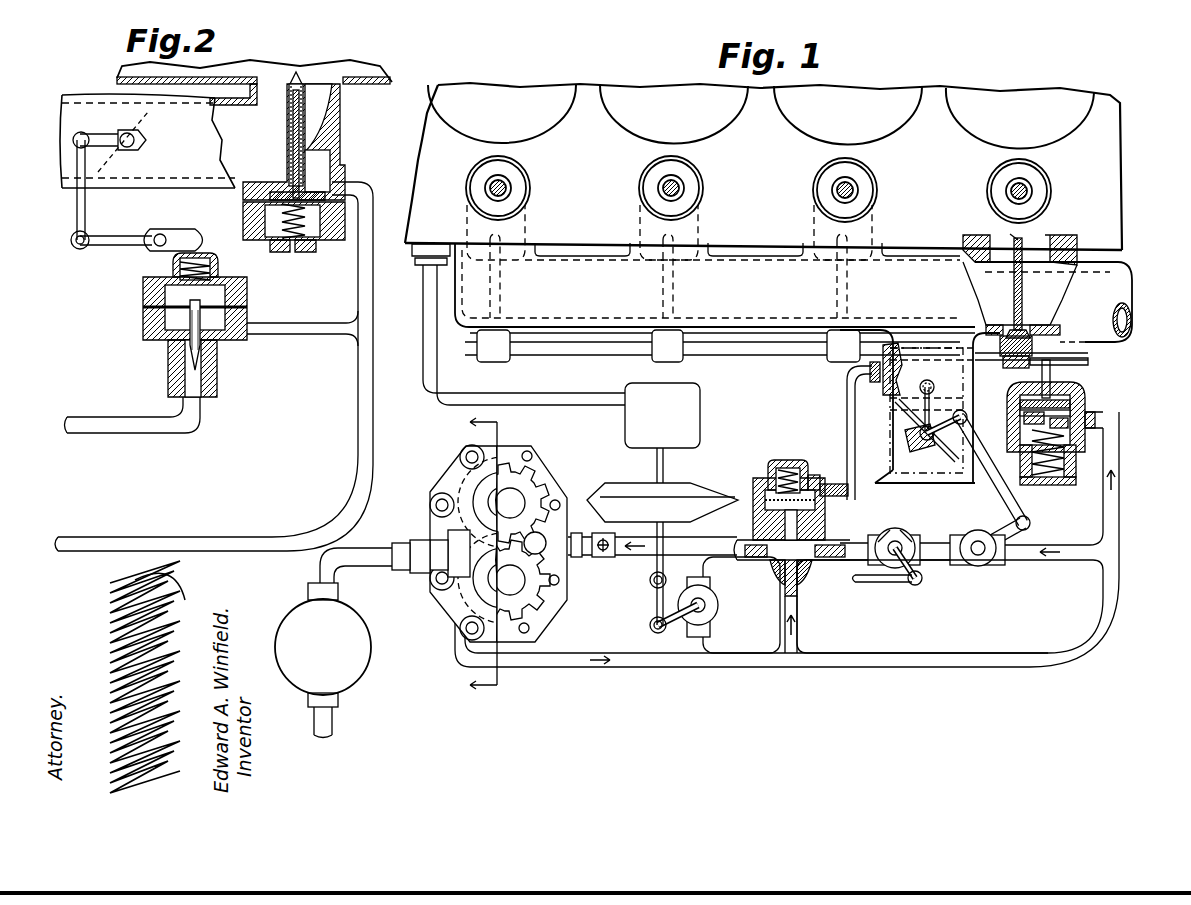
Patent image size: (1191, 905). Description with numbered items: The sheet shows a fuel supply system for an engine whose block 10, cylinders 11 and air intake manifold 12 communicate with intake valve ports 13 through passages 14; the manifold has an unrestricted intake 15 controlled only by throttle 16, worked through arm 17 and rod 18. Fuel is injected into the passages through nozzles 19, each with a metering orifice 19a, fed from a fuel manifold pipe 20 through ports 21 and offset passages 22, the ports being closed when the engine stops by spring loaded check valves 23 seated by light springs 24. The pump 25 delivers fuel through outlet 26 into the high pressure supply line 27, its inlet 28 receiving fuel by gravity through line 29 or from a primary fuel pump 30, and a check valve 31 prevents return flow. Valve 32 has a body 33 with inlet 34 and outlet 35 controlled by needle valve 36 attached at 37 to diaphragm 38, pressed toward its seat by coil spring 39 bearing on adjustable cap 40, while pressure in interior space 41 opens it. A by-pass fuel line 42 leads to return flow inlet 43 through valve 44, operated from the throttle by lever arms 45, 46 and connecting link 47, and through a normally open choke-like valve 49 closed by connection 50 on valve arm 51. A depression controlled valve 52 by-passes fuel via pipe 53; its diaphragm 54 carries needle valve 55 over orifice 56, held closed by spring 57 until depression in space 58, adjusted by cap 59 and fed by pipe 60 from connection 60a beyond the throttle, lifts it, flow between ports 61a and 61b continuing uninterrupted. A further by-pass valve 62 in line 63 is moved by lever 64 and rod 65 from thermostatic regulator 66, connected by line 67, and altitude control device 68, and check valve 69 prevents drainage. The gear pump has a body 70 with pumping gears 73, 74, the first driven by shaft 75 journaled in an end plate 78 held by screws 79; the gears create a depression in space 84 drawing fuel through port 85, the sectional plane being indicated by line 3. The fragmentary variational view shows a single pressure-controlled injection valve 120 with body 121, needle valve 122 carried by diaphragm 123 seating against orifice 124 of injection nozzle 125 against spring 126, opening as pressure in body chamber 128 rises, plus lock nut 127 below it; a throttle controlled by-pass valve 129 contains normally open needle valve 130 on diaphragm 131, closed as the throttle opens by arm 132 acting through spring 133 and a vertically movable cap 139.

In FIG. 1, the engine block 10 is at (1100, 192).
In FIG. 1, the cylinders 11 is at (653, 103).
In FIG. 1, the air intake manifold 12 is at (800, 312).
In FIG. 1, the intake valve ports 13 is at (515, 186).
In FIG. 1, the passages 14 is at (512, 230).
In FIG. 1, the intake 15 is at (893, 462).
In FIG. 1, the throttle 16 is at (905, 432).
In FIG. 1, the arm 17 is at (905, 397).
In FIG. 1, the rod 18 is at (978, 392).
In FIG. 1, the nozzles 19 is at (500, 275).
In FIG. 1, the nozzle orifice 19a is at (1022, 245).
In FIG. 1, the fuel manifold pipe 20 is at (712, 358).
In FIG. 1, the ports 21 is at (1030, 345).
In FIG. 1, the offset passages 22 is at (1026, 332).
In FIG. 1, the spring loaded check valves 23 is at (1003, 346).
In FIG. 1, the springs 24 is at (1014, 322).
In FIG. 1, the pump 25 is at (559, 466).
In FIG. 1, the outlet 26 is at (448, 540).
In FIG. 1, the high pressure supply line 27 is at (866, 667).
In FIG. 2, the high pressure supply line 27 is at (358, 300).
In FIG. 1, the pump inlet 28 is at (420, 574).
In FIG. 1, the line 29 is at (372, 560).
In FIG. 1, the primary fuel pump 30 is at (323, 645).
In FIG. 1, the check valve 31 is at (415, 540).
In FIG. 1, the valve 32 is at (1082, 392).
In FIG. 1, the body 33 is at (1088, 402).
In FIG. 1, the inlet 34 is at (1090, 418).
In FIG. 1, the outlet 35 is at (1052, 382).
In FIG. 1, the needle valve 36 is at (1024, 418).
In FIG. 1, the attachment 37 is at (1030, 435).
In FIG. 1, the diaphragm 38 is at (1098, 428).
In FIG. 1, the coil spring 39 is at (1090, 476).
In FIG. 1, the cap 40 is at (1052, 486).
In FIG. 1, the interior space 41 is at (1090, 385).
In FIG. 1, the by-pass fuel line 42 is at (1035, 545).
In FIG. 2, the by-pass fuel line 42 is at (287, 336).
In FIG. 1, the return flow inlet 43 is at (578, 532).
In FIG. 1, the valve 44 is at (966, 540).
In FIG. 1, the lever arm 45 is at (940, 446).
In FIG. 1, the lever arm 46 is at (1006, 521).
In FIG. 1, the connecting link 47 is at (1003, 494).
In FIG. 1, the normally open valve 49 is at (888, 532).
In FIG. 1, the connection 50 is at (878, 587).
In FIG. 1, the valve arm 51 is at (922, 577).
In FIG. 1, the vacuum controlled valve 52 is at (752, 472).
In FIG. 1, the pipe 53 is at (830, 535).
In FIG. 1, the diaphragm 54 is at (753, 490).
In FIG. 1, the needle valve 55 is at (825, 518).
In FIG. 1, the orifice 56 is at (785, 588).
In FIG. 1, the spring 57 is at (814, 476).
In FIG. 1, the space 58 is at (836, 488).
In FIG. 1, the cap 59 is at (797, 460).
In FIG. 1, the pipe 60 is at (847, 420).
In FIG. 1, the point of connection 60a is at (868, 372).
In FIG. 1, the port 61a is at (810, 574).
In FIG. 1, the port 61b is at (772, 574).
In FIG. 1, the by-pass valve 62 is at (726, 616).
In FIG. 1, the line 63 is at (695, 566).
In FIG. 1, the lever 64 is at (684, 630).
In FIG. 1, the rod 65 is at (663, 462).
In FIG. 1, the thermostatic regulator 66 is at (688, 414).
In FIG. 1, the line 67 is at (478, 390).
In FIG. 1, the altitude control device 68 is at (644, 463).
In FIG. 1, the check valve 69 is at (604, 558).
In FIG. 1, the pump body 70 is at (513, 447).
In FIG. 1, the pumping gear 73 is at (538, 462).
In FIG. 1, the pumping gear 74 is at (540, 630).
In FIG. 1, the shaft 75 is at (505, 500).
In FIG. 1, the end plate 78 is at (461, 455).
In FIG. 1, the screws 79 is at (434, 500).
In FIG. 1, the space 84 is at (556, 505).
In FIG. 1, the port 85 is at (542, 548).
In FIG. 1, the section line 3 is at (470, 558).
In FIG. 2, the pressure-controlled injection valve 120 is at (357, 154).
In FIG. 2, the body 121 is at (246, 222).
In FIG. 2, the needle valve 122 is at (292, 152).
In FIG. 2, the diaphragm 123 is at (270, 197).
In FIG. 2, the orifice 124 is at (302, 82).
In FIG. 2, the injection nozzle 125 is at (288, 125).
In FIG. 2, the spring 126 is at (278, 252).
In FIG. 2, the lock nut 127 is at (306, 252).
In FIG. 2, the body chamber 128 is at (330, 185).
In FIG. 2, the throttle controlled by-pass valve 129 is at (257, 304).
In FIG. 2, the needle valve 130 is at (188, 347).
In FIG. 2, the diaphragm 131 is at (145, 325).
In FIG. 2, the arm 132 is at (132, 240).
In FIG. 2, the spring 133 is at (150, 290).
In FIG. 2, the cap 139 is at (173, 262).